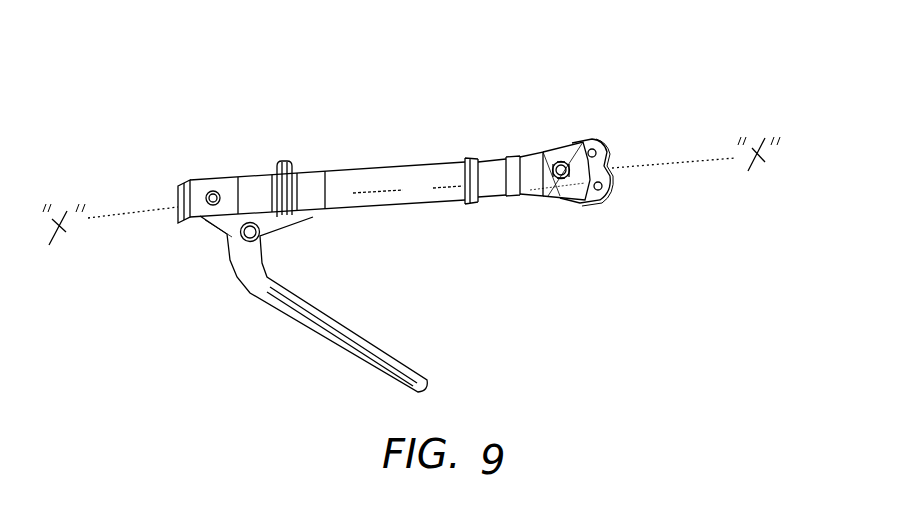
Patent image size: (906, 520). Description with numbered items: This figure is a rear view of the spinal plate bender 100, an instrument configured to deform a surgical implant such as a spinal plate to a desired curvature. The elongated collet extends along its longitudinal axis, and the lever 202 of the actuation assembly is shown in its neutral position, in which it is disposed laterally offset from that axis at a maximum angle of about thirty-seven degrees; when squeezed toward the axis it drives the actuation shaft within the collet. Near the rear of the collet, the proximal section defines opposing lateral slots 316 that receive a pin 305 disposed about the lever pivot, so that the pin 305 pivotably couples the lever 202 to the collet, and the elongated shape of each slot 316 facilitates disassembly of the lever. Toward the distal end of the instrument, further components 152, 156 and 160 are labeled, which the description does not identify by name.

The plate bender 100 is at (417, 135).
The coupling block 152 is at (572, 190).
The pivot bolt 156 is at (566, 161).
The mounting bracket 160 is at (600, 133).
The lever 202 is at (423, 377).
The pin 305 is at (210, 195).
The lateral slots 316 is at (230, 181).